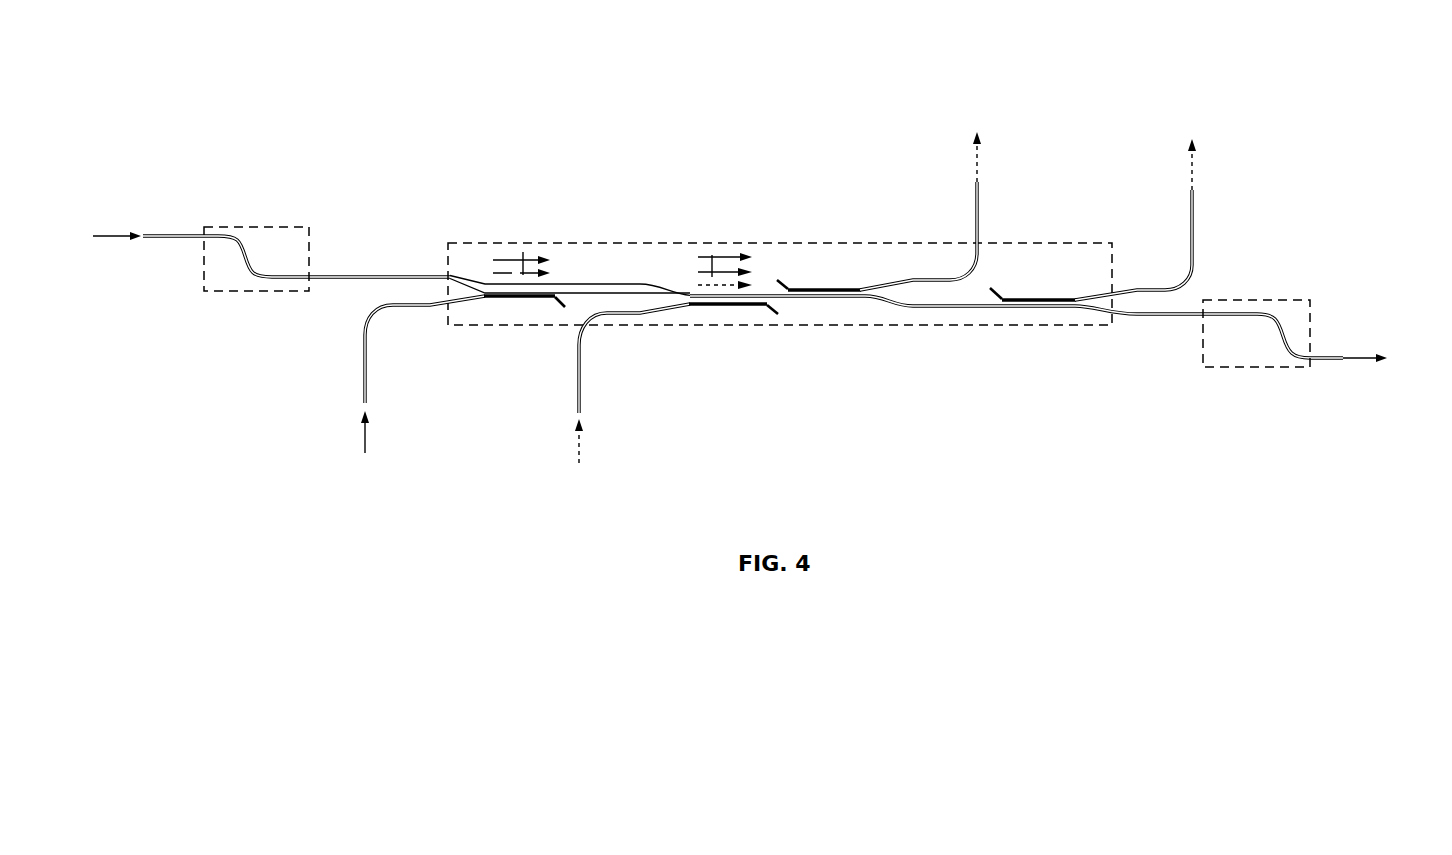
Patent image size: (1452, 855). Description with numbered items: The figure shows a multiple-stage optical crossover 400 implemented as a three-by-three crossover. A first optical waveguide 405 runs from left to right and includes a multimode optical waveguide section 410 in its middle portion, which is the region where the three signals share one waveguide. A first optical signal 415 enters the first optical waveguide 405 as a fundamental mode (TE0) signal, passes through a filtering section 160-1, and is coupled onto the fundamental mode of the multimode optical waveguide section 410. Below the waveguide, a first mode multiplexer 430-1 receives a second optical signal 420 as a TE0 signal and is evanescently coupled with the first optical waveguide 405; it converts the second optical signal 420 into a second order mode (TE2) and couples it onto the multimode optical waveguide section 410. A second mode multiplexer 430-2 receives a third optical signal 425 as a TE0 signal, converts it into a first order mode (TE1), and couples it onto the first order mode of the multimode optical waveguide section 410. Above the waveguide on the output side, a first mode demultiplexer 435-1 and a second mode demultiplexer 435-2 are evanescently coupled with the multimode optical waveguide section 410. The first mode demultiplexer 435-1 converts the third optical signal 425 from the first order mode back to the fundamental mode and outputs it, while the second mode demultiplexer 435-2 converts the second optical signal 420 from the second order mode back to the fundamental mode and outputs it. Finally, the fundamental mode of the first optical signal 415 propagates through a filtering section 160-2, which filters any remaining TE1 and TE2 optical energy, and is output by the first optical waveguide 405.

The multiple-stage optical crossover 400 is at (1284, 69).
The first optical waveguide 405 is at (963, 307).
The multimode optical waveguide section 410 is at (862, 325).
The first optical signal 415 is at (105, 238).
The second optical signal 420 is at (525, 265).
The third optical signal 425 is at (732, 270).
The first mode multiplexer 430-1 is at (393, 307).
The second mode multiplexer 430-2 is at (600, 323).
The first mode demultiplexer 435-1 is at (980, 226).
The second mode demultiplexer 435-2 is at (1195, 226).
The filtering section 160-1 is at (210, 292).
The filtering section 160-2 is at (1225, 367).